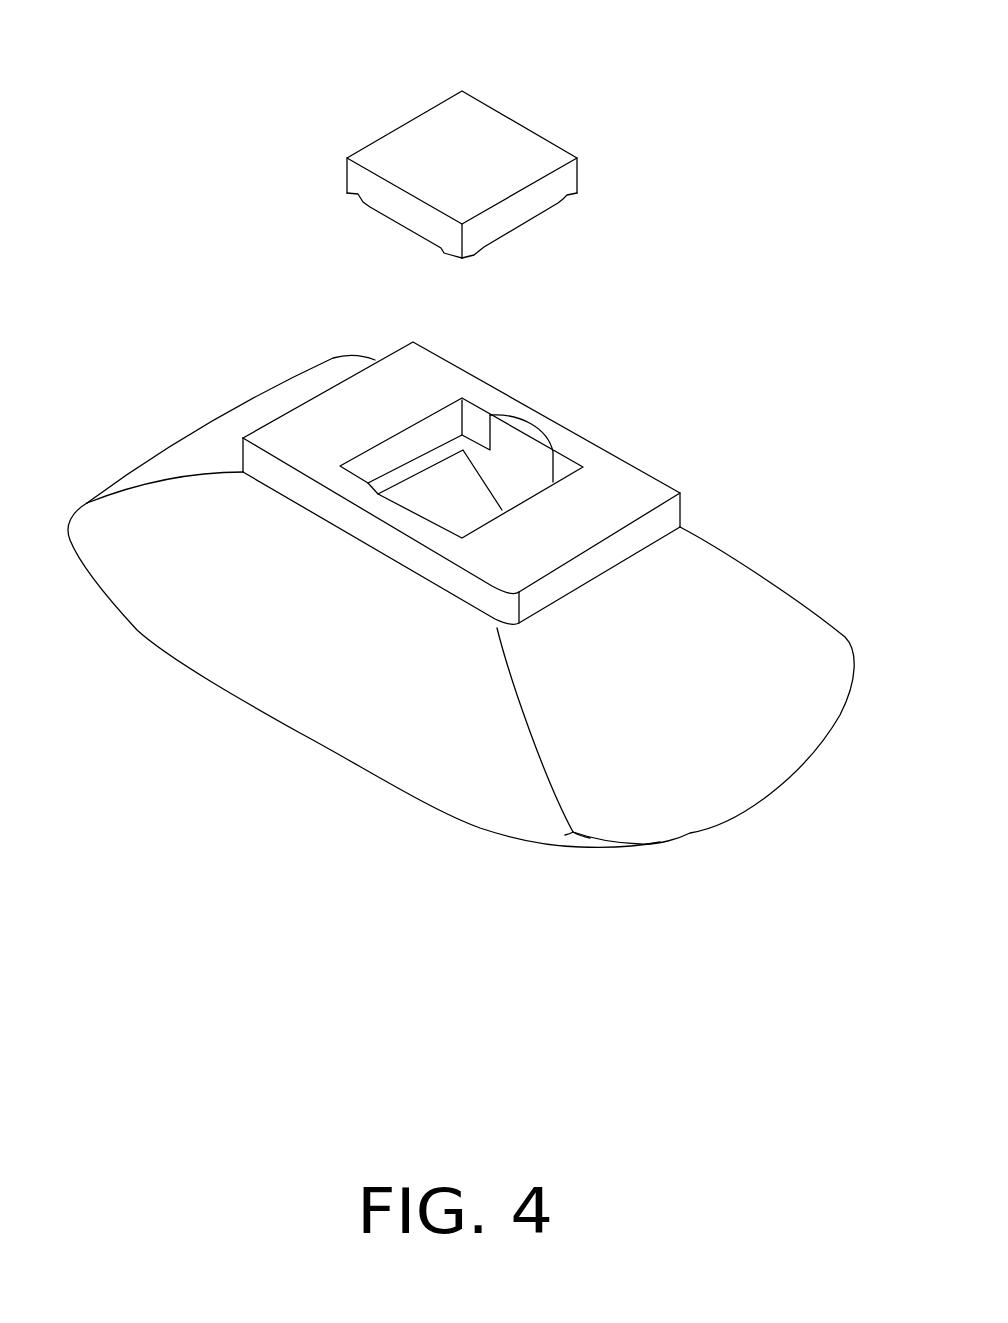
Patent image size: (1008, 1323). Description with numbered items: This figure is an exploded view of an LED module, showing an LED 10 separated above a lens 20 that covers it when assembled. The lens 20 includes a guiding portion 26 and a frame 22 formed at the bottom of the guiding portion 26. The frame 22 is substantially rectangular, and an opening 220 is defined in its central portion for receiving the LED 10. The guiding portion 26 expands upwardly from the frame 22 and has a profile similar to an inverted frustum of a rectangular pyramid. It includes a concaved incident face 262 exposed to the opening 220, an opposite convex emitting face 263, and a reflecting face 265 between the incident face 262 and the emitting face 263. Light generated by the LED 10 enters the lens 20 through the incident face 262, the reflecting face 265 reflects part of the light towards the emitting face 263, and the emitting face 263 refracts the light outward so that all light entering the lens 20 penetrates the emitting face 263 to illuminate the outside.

The LED 10 is at (517, 145).
The lens 20 is at (786, 374).
The frame 22 is at (625, 488).
The opening 220 is at (510, 450).
The guiding portion 26 is at (710, 577).
The incident face 262 is at (455, 508).
The emitting face 263 is at (575, 844).
The reflecting face 265 is at (253, 682).